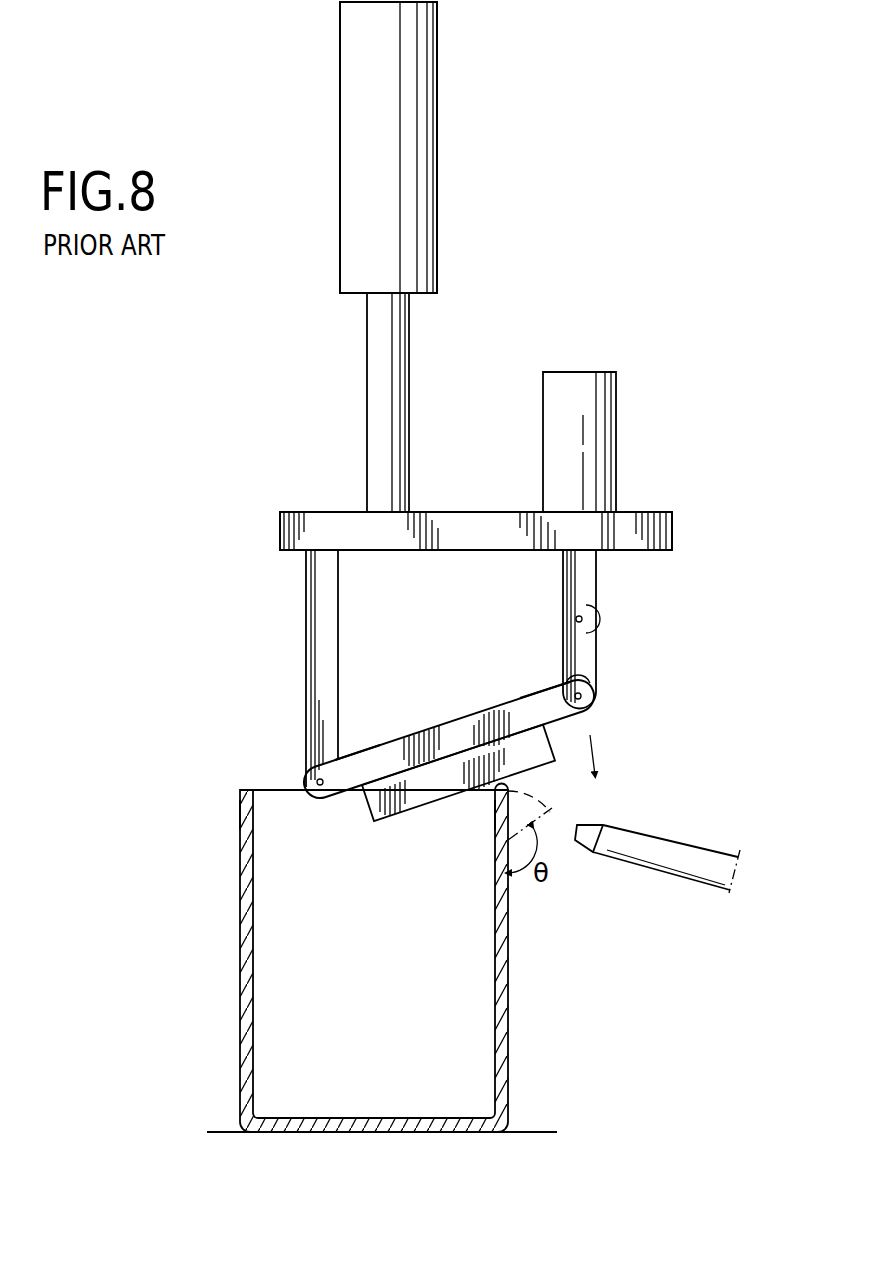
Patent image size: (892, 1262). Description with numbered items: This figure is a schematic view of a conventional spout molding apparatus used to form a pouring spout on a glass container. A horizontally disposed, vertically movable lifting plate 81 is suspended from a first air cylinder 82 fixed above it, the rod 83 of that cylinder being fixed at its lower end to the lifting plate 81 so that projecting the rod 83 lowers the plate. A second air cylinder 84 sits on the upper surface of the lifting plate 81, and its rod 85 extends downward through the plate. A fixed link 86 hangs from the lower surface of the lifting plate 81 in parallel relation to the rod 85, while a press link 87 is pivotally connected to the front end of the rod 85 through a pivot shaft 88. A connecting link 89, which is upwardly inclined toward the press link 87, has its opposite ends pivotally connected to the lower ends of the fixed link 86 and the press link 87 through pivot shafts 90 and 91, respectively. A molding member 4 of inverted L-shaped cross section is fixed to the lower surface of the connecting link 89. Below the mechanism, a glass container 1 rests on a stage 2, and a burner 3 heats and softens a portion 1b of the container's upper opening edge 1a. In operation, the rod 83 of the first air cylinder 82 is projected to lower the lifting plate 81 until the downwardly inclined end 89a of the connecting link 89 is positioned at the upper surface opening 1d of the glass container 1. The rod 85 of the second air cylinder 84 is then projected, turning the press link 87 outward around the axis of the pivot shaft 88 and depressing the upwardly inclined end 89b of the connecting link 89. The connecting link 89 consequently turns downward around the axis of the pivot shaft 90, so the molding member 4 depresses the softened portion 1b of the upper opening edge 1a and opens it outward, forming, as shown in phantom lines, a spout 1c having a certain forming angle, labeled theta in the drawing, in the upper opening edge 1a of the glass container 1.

The glass container 1 is at (240, 1082).
The upper opening edge 1a is at (240, 812).
The softened portion of the upper opening edge 1b is at (495, 814).
The spout 1c is at (550, 812).
The upper surface opening 1d is at (277, 800).
The stage 2 is at (545, 1131).
The burner 3 is at (668, 873).
The molding member 4 is at (405, 817).
The lifting plate 81 is at (672, 516).
The first air cylinder 82 is at (437, 117).
The rod of the first air cylinder 83 is at (410, 385).
The second air cylinder 84 is at (617, 372).
The rod of the second air cylinder 85 is at (597, 575).
The fixed link 86 is at (306, 615).
The press link 87 is at (597, 640).
The pivot shaft 88 is at (572, 620).
The connecting link 89 is at (445, 730).
The downwardly inclined end of the connecting link 89a is at (362, 762).
The upwardly inclined end of the connecting link 89b is at (540, 706).
The pivot shaft 90 is at (310, 760).
The pivot shaft 91 is at (594, 700).